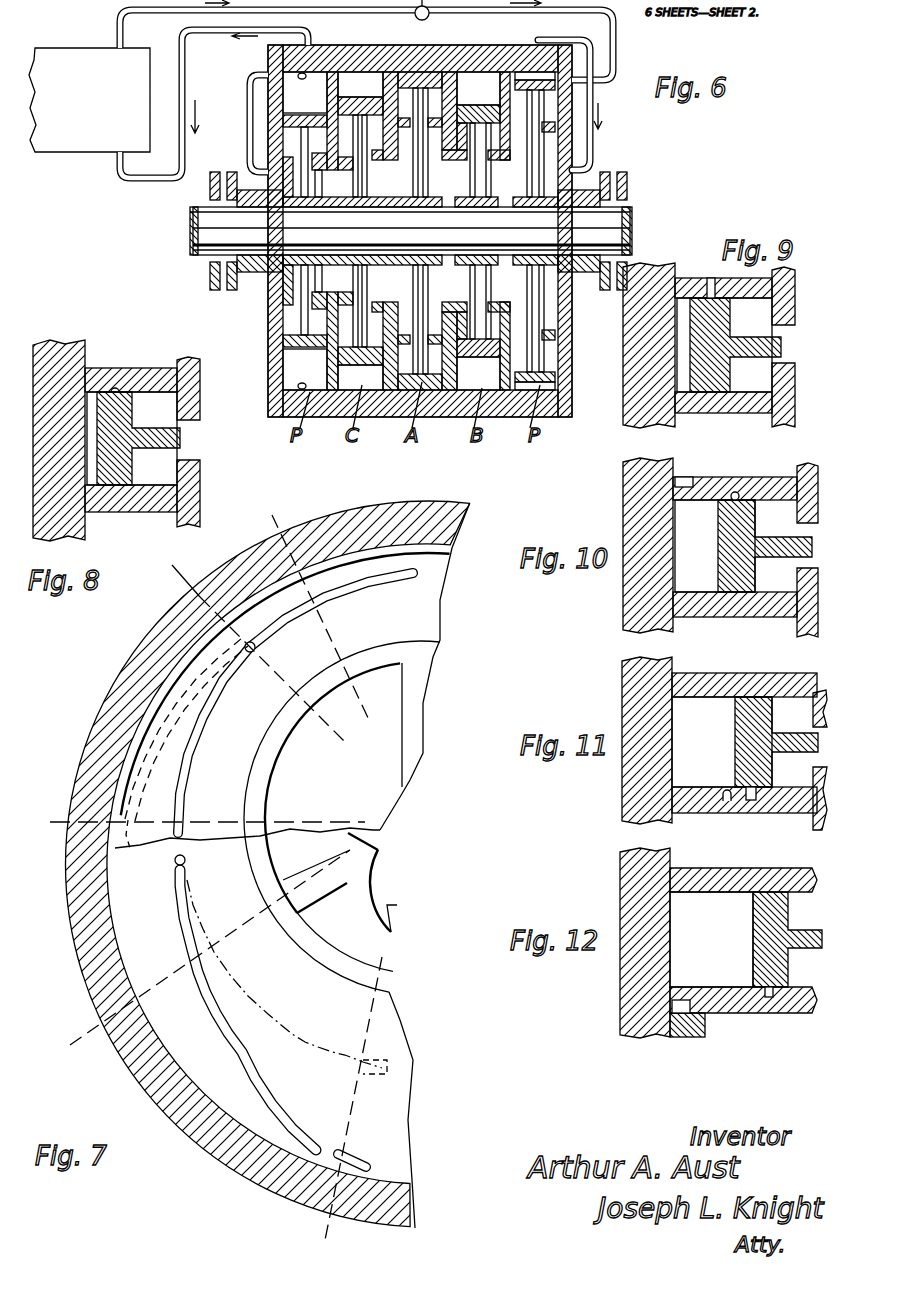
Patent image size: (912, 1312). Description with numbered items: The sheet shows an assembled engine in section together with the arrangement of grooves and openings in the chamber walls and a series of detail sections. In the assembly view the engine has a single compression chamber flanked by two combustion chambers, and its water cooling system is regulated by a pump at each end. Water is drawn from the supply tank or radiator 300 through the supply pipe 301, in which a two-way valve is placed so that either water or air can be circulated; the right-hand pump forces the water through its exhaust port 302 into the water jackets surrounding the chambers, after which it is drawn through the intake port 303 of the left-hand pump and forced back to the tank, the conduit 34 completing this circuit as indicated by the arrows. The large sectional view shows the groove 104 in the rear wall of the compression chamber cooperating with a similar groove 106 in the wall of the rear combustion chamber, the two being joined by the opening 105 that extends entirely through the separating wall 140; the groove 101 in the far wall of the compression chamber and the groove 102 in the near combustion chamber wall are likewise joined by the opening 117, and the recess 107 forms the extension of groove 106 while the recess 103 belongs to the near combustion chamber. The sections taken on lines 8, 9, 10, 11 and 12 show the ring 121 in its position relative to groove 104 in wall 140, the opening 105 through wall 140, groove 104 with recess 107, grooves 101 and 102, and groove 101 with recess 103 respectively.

In FIG. 6, the supply tank or radiator 300 is at (89, 100).
In FIG. 6, the supply pipe 301 is at (366, 40).
In FIG. 6, the exhaust port 302 is at (596, 140).
In FIG. 6, the intake port 303 is at (250, 108).
In FIG. 6, the conduit 34 is at (214, 123).
In FIG. 8, the wall 140 is at (92, 368).
In FIG. 9, the wall 140 is at (795, 273).
In FIG. 8, the groove 104 is at (118, 385).
In FIG. 10, the groove 104 is at (737, 490).
In FIG. 7, the groove 104 is at (186, 723).
In FIG. 8, the ring 121 is at (135, 463).
In FIG. 10, the ring 121 is at (717, 560).
In FIG. 12, the ring 121 is at (752, 935).
In FIG. 9, the opening 105 is at (711, 278).
In FIG. 7, the opening 105 is at (256, 647).
In FIG. 10, the opening or recess 107 is at (684, 472).
In FIG. 7, the opening or recess 107 is at (145, 835).
In FIG. 7, the groove 106 is at (186, 729).
In FIG. 11, the groove 102 is at (727, 805).
In FIG. 7, the groove 102 is at (235, 1069).
In FIG. 11, the groove 101 is at (752, 803).
In FIG. 12, the groove 101 is at (769, 998).
In FIG. 7, the groove 101 is at (330, 1097).
In FIG. 12, the recess 103 is at (684, 1018).
In FIG. 7, the recess 103 is at (348, 1157).
In FIG. 7, the opening 117 is at (176, 862).
In FIG. 7, the section line 8— 8 is at (322, 619).
In FIG. 7, the section line 9— 9 is at (258, 658).
In FIG. 7, the section line 10— 10 is at (191, 817).
In FIG. 7, the section line 11— 11 is at (328, 872).
In FIG. 7, the section line 12— 12 is at (348, 1096).